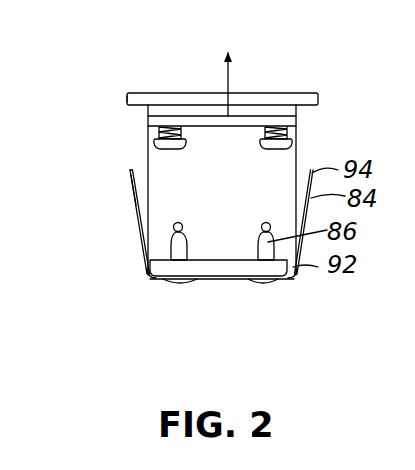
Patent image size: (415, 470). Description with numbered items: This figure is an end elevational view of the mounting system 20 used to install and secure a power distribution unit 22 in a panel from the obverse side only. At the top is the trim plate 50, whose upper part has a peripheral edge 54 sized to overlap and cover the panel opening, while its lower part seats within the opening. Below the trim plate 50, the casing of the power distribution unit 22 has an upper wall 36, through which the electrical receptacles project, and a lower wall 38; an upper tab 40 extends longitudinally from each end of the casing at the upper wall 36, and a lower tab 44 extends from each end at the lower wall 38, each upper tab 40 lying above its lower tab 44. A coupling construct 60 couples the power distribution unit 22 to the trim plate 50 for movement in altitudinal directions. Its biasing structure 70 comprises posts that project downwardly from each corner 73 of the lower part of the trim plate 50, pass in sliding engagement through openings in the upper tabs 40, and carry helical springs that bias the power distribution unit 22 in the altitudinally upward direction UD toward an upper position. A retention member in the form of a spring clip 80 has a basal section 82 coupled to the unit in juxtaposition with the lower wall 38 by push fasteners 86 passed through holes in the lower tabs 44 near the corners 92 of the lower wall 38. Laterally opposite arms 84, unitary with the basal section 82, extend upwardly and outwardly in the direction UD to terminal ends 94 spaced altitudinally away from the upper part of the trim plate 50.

The mounting system 20 is at (188, 88).
The power distribution unit 22 is at (297, 155).
The upper wall 36 is at (153, 145).
The lower wall 38 is at (198, 257).
The upper tab 40 is at (232, 122).
The lower tab 44 is at (222, 265).
The trim plate 50 is at (155, 91).
The peripheral edge 54 is at (127, 99).
The coupling construct 60 is at (128, 167).
The biasing structure 70 is at (291, 140).
The corner 73 is at (156, 118).
The spring clip 80 is at (214, 283).
The basal section 82 is at (240, 284).
The arms 84 is at (132, 201).
The push fasteners 86 is at (172, 240).
The corners 92 is at (147, 268).
The terminal ends 94 is at (130, 172).
The altitudinally upward direction UD is at (230, 83).